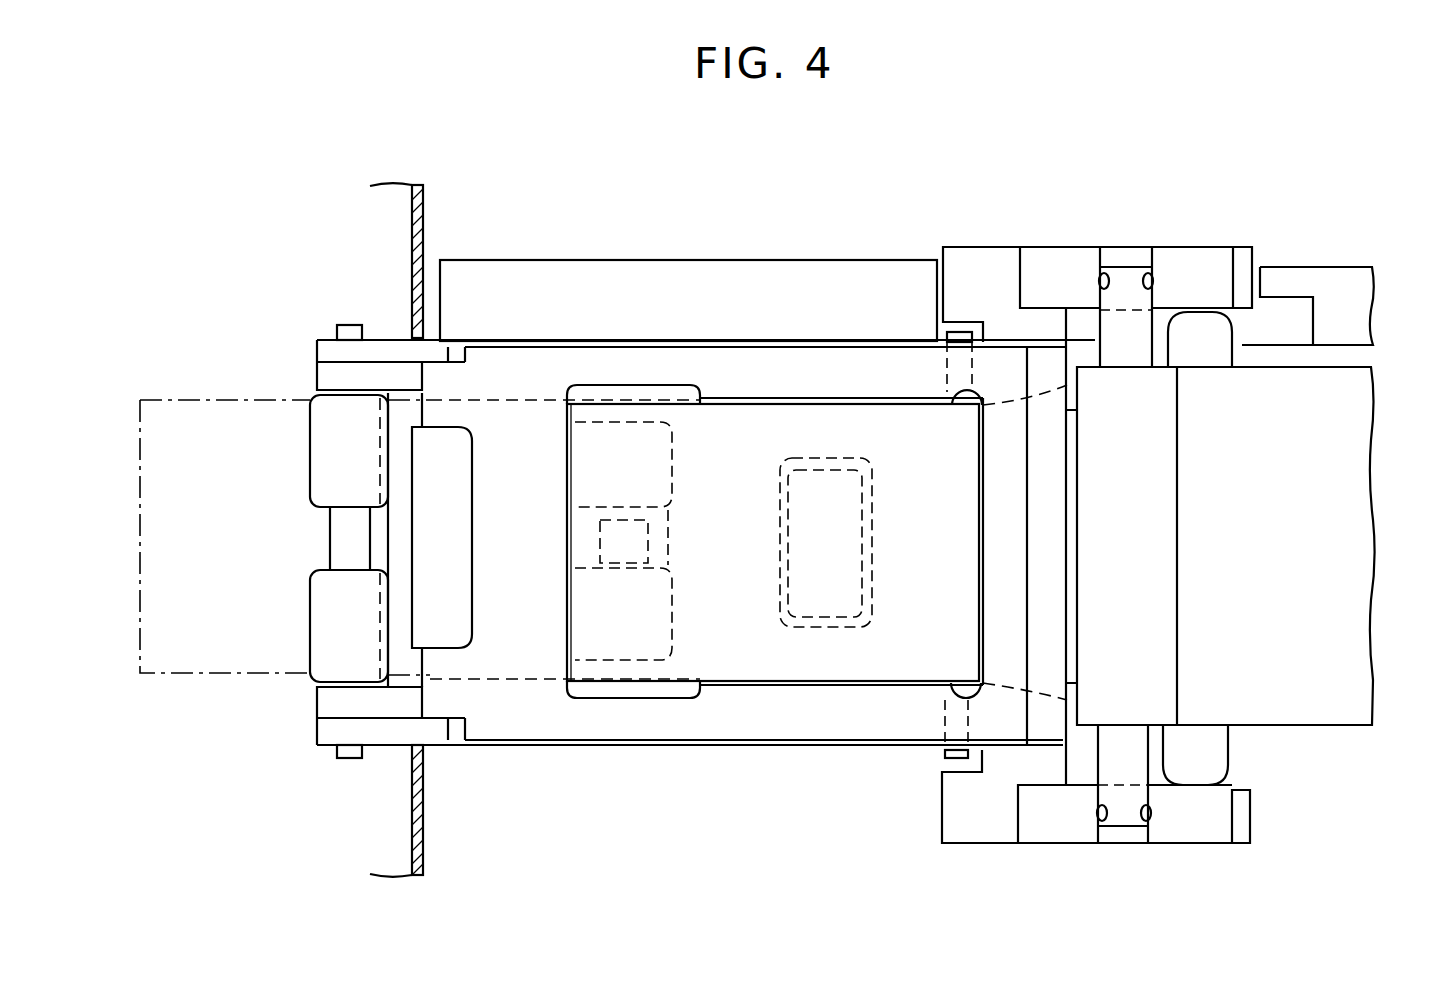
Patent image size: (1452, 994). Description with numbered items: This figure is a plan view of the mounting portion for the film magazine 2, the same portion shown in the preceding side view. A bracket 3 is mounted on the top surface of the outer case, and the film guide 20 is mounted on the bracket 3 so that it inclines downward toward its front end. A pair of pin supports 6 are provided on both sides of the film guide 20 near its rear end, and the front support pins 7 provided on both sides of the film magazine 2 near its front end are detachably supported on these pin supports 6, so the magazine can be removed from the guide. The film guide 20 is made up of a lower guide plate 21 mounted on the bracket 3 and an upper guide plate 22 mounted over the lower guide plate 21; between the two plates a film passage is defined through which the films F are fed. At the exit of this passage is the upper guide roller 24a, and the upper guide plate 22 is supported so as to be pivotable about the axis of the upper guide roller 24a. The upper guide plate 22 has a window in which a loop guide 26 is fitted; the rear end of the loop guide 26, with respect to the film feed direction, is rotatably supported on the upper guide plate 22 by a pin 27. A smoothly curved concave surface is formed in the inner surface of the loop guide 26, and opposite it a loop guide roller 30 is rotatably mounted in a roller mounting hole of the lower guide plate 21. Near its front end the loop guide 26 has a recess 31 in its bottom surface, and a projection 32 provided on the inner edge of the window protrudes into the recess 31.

The film magazine 2 is at (1352, 558).
The bracket 3 is at (845, 276).
The pin supports 6 is at (1060, 266).
The front support pins 7 is at (1120, 273).
The film guide 20 is at (559, 326).
The lower guide plate 21 is at (437, 746).
The upper guide plate 22 is at (632, 362).
The upper guide roller 24a is at (318, 652).
The loop guide 26 is at (748, 412).
The pin 27 is at (942, 758).
The loop guide roller 30 is at (800, 612).
The recess 31 is at (662, 565).
The projection 32 is at (666, 517).
The films F is at (240, 398).